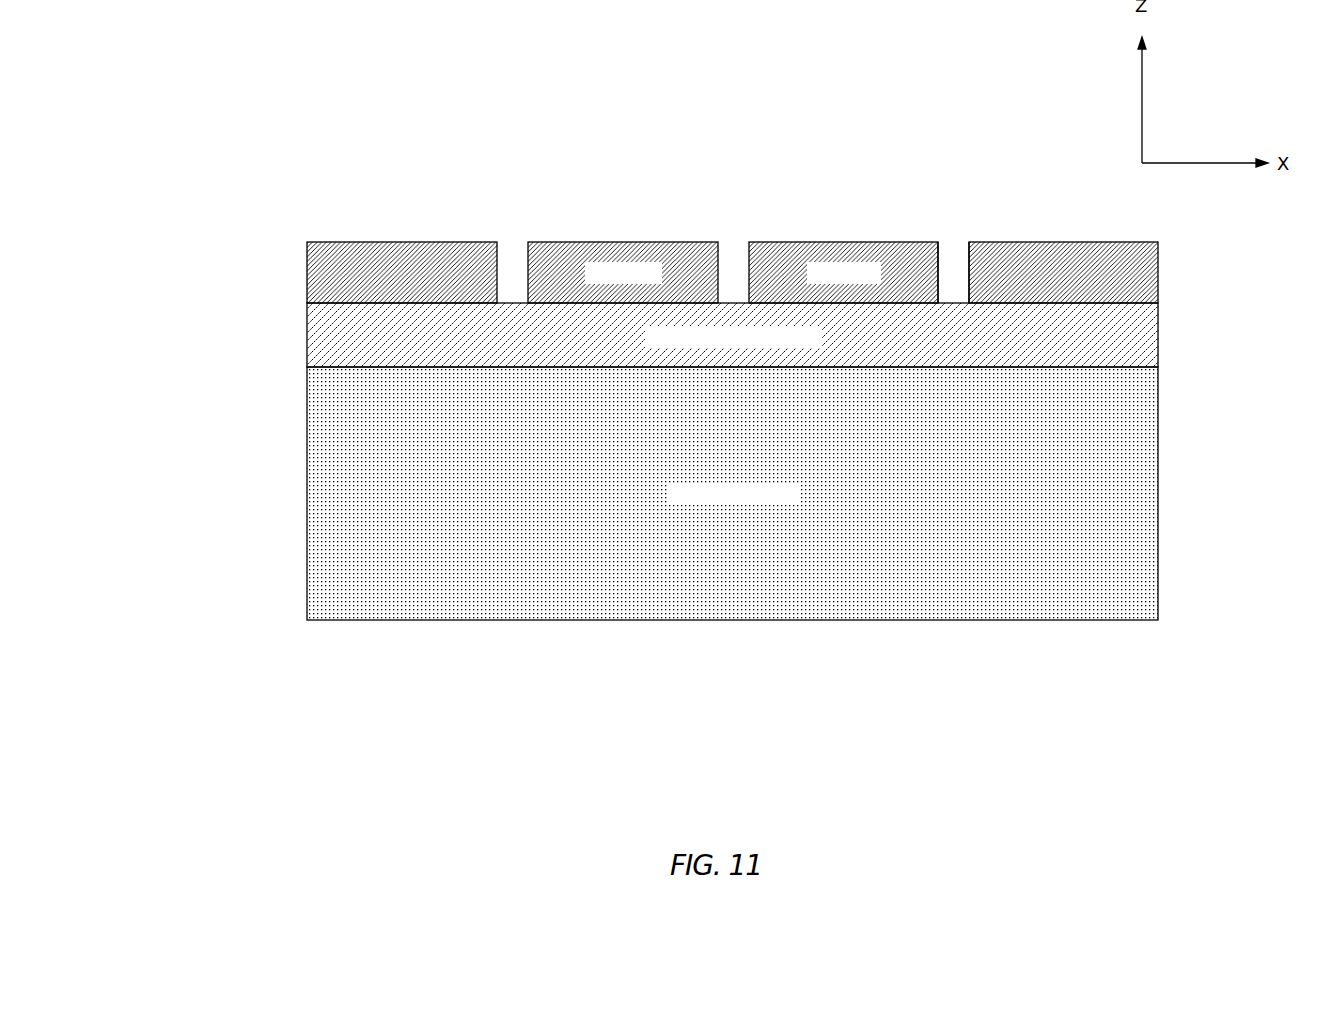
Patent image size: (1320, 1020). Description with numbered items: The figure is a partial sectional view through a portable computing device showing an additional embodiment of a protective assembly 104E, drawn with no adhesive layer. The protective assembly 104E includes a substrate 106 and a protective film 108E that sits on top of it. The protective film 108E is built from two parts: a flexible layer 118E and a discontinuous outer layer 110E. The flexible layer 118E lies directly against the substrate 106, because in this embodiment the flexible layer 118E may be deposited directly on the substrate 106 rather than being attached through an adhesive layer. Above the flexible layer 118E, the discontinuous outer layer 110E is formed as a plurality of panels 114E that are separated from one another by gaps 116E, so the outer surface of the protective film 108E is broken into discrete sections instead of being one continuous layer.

The protective assembly 104E is at (685, 347).
The protective film 108E is at (685, 232).
The discontinuous outer layer 110E is at (783, 201).
The panels 114E is at (1070, 242).
The gaps 116E is at (969, 243).
The flexible layer 118E is at (783, 340).
The substrate 106 is at (777, 493).